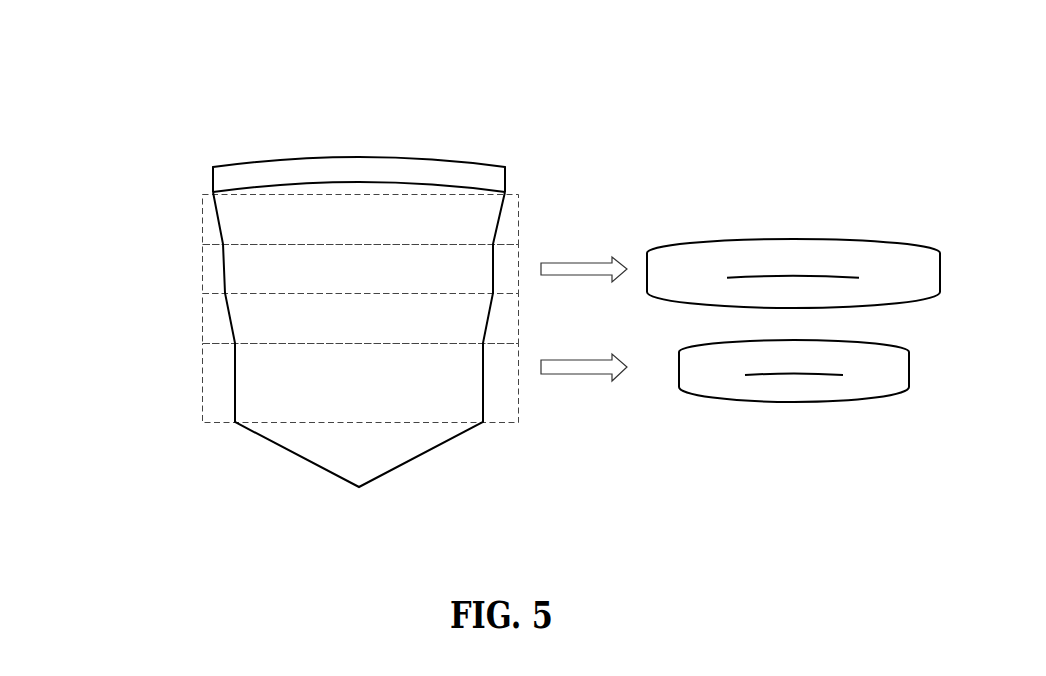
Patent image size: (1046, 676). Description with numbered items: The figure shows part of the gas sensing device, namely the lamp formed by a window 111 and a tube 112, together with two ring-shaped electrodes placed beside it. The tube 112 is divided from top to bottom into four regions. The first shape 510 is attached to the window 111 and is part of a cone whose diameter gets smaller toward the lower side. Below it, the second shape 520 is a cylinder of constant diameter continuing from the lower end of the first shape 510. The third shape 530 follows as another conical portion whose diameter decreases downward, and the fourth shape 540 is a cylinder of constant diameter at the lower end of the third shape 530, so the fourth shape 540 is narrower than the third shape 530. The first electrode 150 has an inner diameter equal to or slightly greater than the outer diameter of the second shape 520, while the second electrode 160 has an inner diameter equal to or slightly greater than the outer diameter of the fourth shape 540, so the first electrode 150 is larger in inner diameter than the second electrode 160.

The window 111 is at (250, 175).
The tube 112 is at (423, 456).
The first electrode 150 is at (849, 239).
The second electrode 160 is at (848, 402).
The first shape 510 is at (202, 213).
The second shape 520 is at (202, 270).
The third shape 530 is at (202, 320).
The fourth shape 540 is at (202, 383).